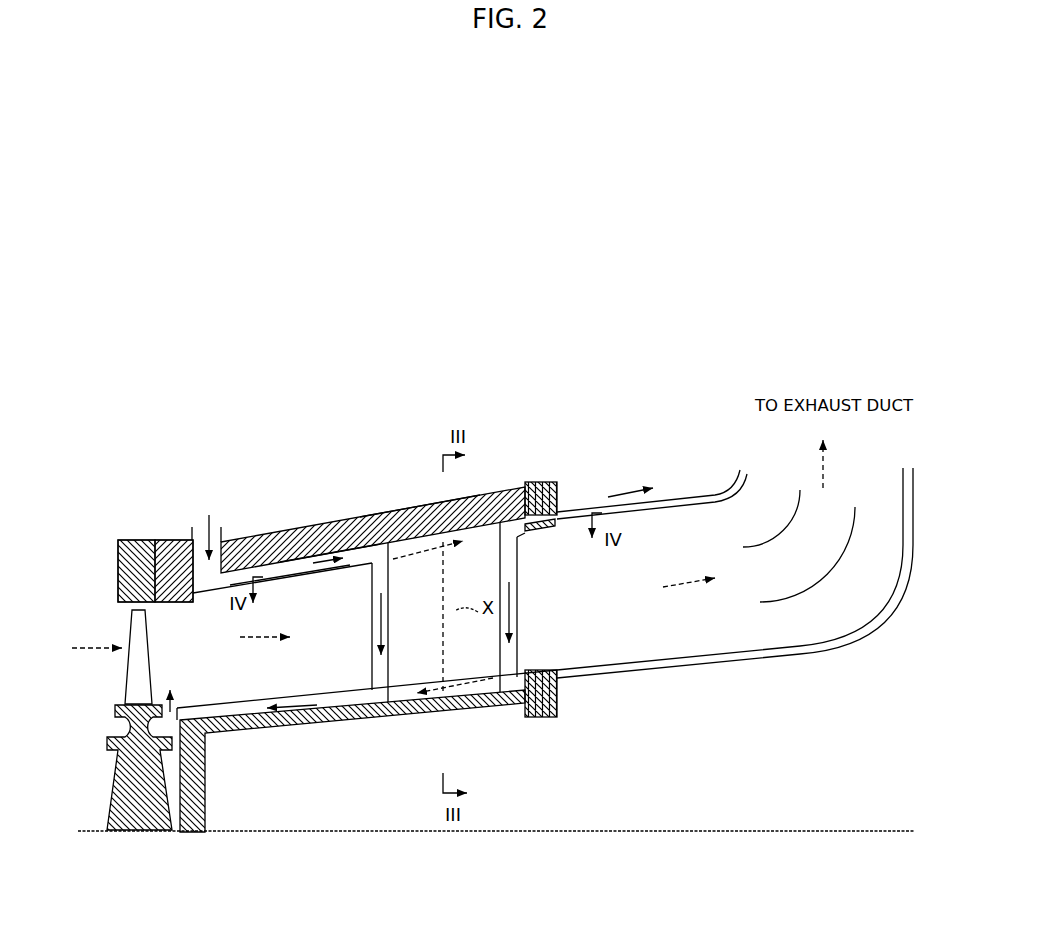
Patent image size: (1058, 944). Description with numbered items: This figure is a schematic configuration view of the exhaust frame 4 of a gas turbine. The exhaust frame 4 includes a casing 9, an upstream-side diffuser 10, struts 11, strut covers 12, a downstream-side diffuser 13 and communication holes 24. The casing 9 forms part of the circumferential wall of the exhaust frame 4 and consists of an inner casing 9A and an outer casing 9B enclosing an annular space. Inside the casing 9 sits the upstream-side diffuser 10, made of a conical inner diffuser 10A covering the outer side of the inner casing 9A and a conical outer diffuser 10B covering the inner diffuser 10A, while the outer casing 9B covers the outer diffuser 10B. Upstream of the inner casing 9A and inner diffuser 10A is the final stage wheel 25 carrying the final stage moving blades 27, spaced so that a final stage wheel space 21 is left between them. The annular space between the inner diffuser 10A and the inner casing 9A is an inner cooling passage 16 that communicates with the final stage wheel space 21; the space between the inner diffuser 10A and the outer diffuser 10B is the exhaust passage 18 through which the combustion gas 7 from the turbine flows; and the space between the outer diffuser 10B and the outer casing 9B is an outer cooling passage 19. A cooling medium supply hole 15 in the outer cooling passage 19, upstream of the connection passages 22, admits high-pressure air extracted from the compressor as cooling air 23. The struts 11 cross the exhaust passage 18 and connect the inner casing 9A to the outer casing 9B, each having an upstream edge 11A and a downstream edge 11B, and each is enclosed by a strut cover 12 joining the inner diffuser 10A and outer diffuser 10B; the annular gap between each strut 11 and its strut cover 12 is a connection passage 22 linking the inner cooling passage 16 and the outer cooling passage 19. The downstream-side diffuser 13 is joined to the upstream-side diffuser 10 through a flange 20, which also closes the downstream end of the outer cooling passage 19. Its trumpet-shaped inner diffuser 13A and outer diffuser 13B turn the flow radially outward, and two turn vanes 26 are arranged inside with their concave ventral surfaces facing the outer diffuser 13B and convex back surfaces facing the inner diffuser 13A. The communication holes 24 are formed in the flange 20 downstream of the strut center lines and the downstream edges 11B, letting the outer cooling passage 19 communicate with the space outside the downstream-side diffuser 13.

The exhaust frame 4 is at (470, 395).
The combustion gas 7 is at (100, 652).
The casing 9 is at (387, 502).
The inner casing 9A is at (473, 712).
The outer casing 9B is at (408, 490).
The upstream-side diffuser 10 is at (282, 547).
The inner diffuser 10A is at (255, 732).
The outer diffuser 10B is at (293, 573).
The strut 11 is at (407, 710).
The upstream edge 11A is at (372, 578).
The downstream edge 11B is at (503, 558).
The strut cover 12 is at (553, 668).
The downstream-side diffuser 13 is at (695, 678).
The inner diffuser 13A is at (733, 665).
The outer diffuser 13B is at (702, 492).
The cooling medium supply hole 15 is at (193, 537).
The inner cooling passage 16 is at (323, 702).
The exhaust passage 18 is at (290, 587).
The outer cooling passage 19 is at (353, 557).
The flange 20 is at (557, 483).
The final stage wheel space 21 is at (179, 701).
The connection passage 22 is at (377, 672).
The cooling air 23 is at (210, 523).
The communication hole 24 is at (554, 527).
The final stage wheel 25 is at (142, 840).
The turn vane 26 is at (808, 585).
The final stage moving blade 27 is at (130, 637).